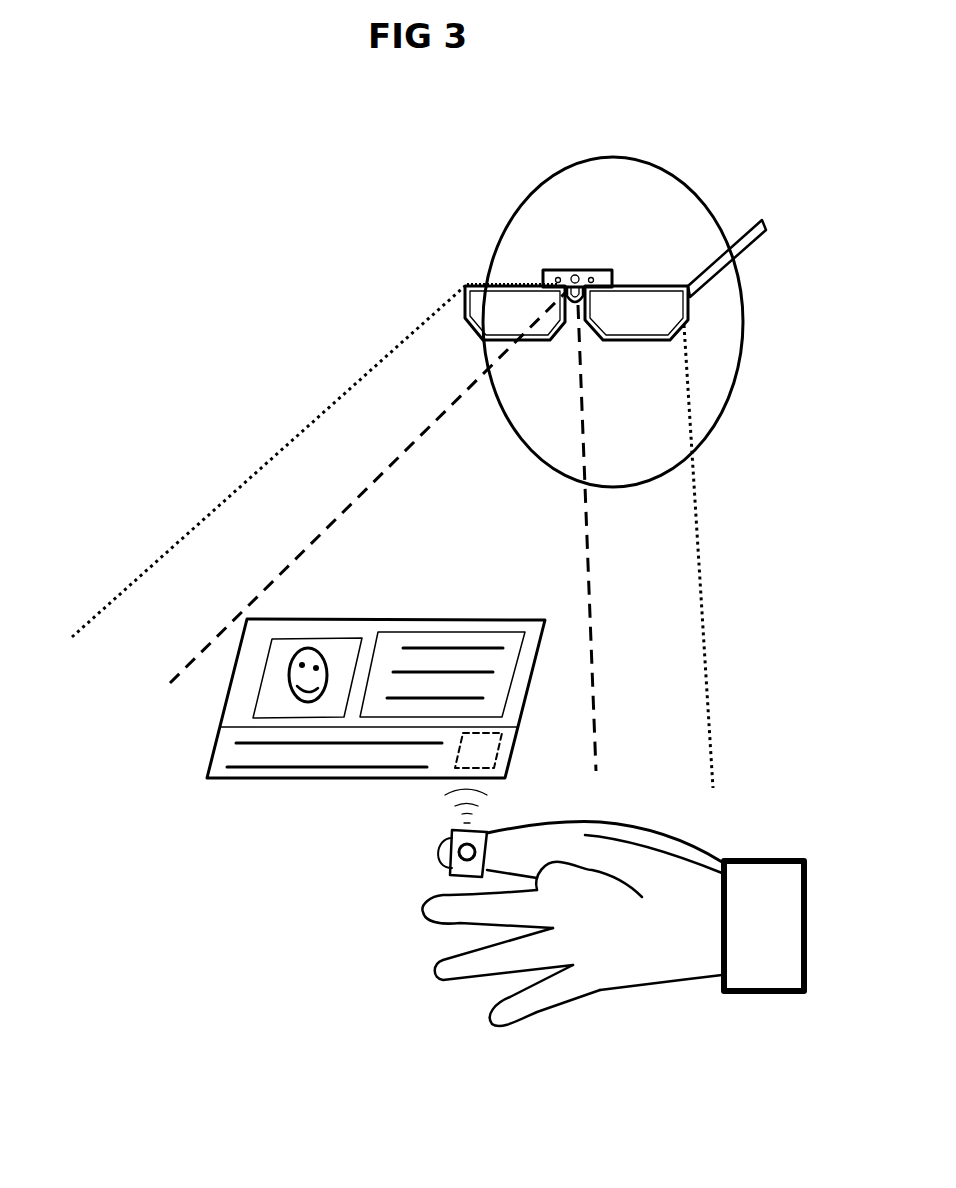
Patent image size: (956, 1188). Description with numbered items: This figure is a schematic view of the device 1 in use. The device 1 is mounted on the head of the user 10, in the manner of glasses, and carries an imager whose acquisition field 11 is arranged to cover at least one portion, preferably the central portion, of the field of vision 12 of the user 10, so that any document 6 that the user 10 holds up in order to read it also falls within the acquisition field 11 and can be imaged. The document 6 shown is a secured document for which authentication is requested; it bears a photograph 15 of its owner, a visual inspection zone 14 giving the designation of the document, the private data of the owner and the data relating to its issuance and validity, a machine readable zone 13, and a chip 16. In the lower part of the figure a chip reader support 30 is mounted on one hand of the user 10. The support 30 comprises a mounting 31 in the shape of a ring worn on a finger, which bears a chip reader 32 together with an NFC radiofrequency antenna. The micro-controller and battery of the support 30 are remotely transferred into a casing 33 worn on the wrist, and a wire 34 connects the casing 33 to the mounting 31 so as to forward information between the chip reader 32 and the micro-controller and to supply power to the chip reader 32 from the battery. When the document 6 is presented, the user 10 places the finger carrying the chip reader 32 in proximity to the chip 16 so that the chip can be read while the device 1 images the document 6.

The device 1 is at (522, 277).
The user 10 is at (548, 190).
The acquisition field 11 is at (403, 495).
The field of vision 12 is at (400, 405).
The machine readable zone 13 is at (384, 718).
The document 6 is at (277, 796).
The visual inspection zone 14 is at (450, 632).
The photograph 15 is at (318, 638).
The chip 16 is at (498, 751).
The chip reader support 30 is at (566, 898).
The mounting 31 is at (452, 838).
The chip reader 32 is at (459, 853).
The casing 33 is at (784, 858).
The wire 34 is at (689, 836).